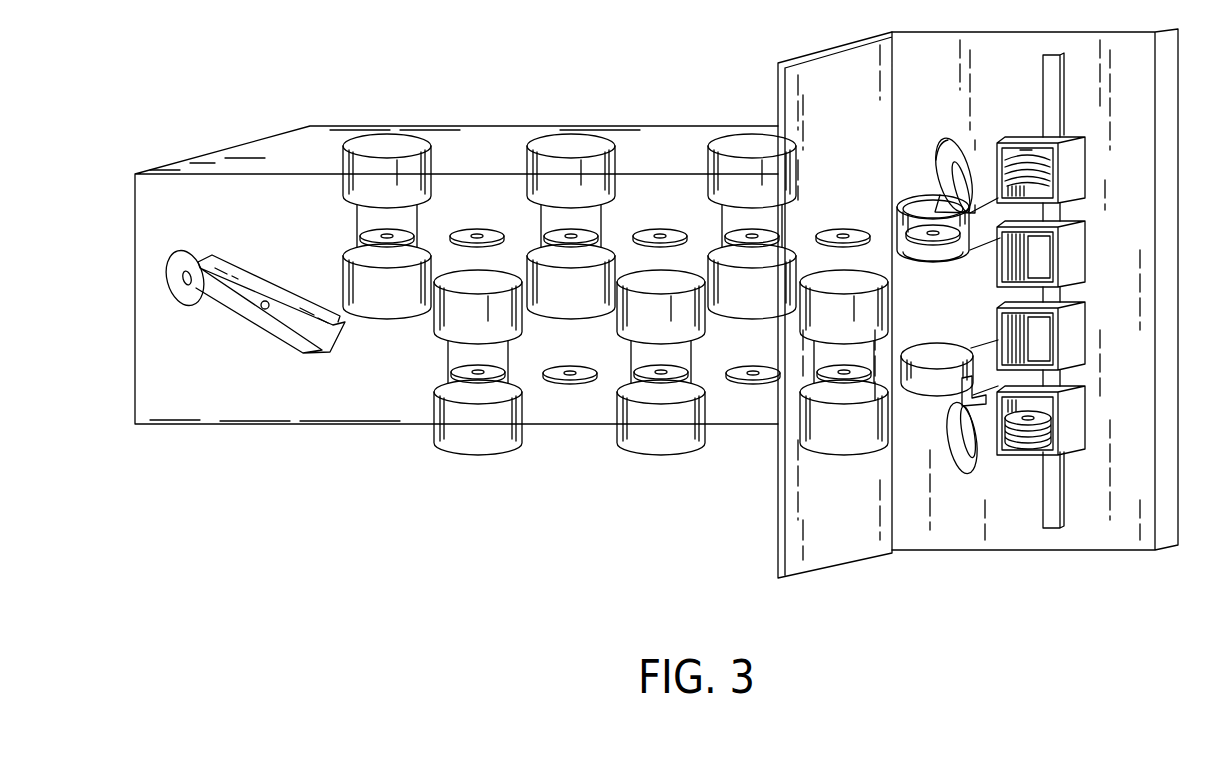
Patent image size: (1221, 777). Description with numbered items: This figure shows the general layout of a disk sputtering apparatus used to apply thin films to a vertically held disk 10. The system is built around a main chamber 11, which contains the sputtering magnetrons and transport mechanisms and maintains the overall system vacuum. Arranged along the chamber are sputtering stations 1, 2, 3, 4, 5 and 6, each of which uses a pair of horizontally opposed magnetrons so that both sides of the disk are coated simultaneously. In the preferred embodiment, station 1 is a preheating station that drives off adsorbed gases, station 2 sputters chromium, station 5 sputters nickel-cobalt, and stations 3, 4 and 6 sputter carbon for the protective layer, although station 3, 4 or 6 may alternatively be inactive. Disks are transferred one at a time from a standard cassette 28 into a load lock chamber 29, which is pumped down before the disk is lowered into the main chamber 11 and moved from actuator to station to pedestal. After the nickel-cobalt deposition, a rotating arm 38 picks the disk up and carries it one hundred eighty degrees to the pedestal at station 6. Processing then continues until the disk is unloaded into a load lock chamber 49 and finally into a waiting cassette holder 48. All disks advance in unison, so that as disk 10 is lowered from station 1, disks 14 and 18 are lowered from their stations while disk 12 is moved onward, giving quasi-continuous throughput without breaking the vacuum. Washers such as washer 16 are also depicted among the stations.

The sputtering station 1 is at (837, 377).
The sputtering station 2 is at (639, 377).
The sputtering station 3 is at (560, 167).
The sputtering station 4 is at (742, 168).
The sputtering station 5 is at (434, 378).
The sputtering station 6 is at (375, 167).
The disk 10 is at (867, 378).
The main chamber 11 is at (458, 126).
The disk 12 is at (755, 381).
The disk 14 is at (638, 372).
The washer 16 is at (570, 381).
The disk 18 is at (463, 368).
The cassette 28 is at (1077, 416).
The load lock chamber 29 is at (942, 345).
The rotating arm 38 is at (258, 272).
The cassette holder 48 is at (1077, 163).
The load lock chamber 49 is at (900, 218).